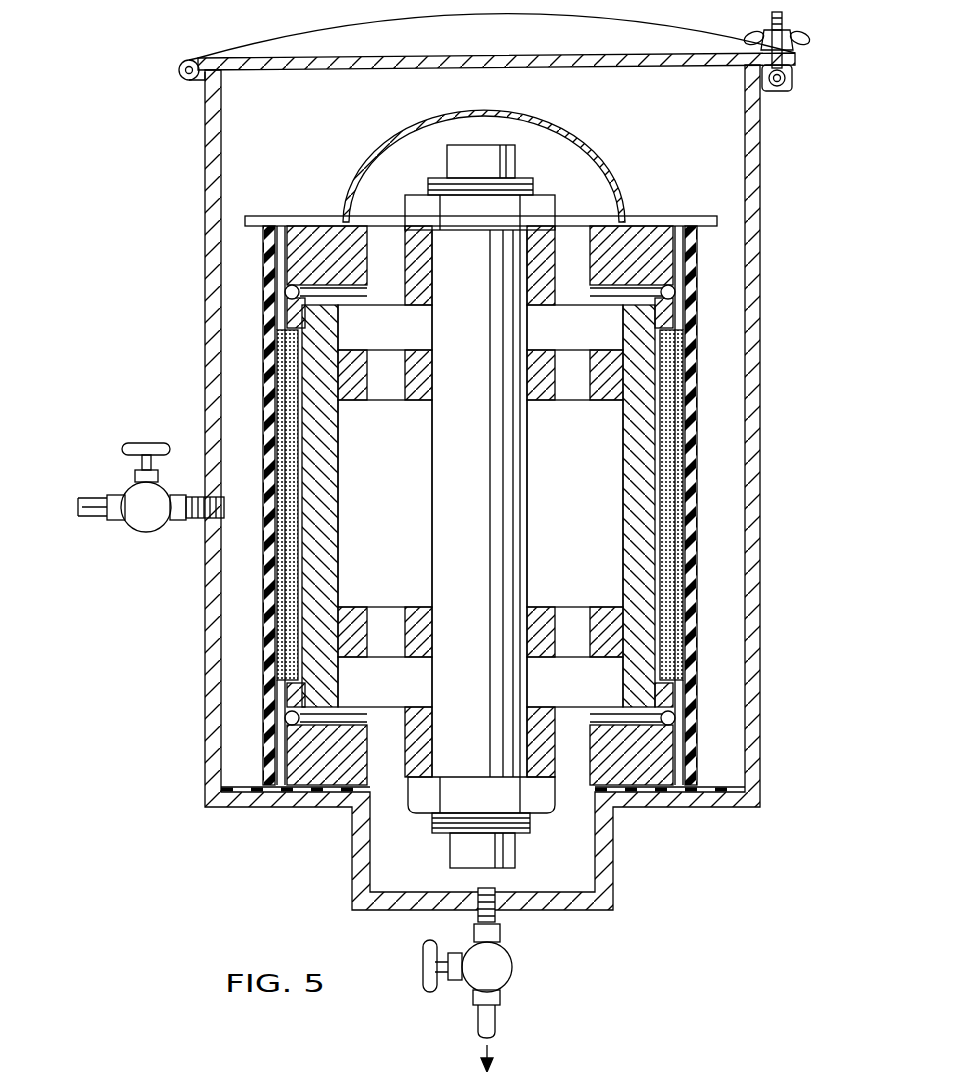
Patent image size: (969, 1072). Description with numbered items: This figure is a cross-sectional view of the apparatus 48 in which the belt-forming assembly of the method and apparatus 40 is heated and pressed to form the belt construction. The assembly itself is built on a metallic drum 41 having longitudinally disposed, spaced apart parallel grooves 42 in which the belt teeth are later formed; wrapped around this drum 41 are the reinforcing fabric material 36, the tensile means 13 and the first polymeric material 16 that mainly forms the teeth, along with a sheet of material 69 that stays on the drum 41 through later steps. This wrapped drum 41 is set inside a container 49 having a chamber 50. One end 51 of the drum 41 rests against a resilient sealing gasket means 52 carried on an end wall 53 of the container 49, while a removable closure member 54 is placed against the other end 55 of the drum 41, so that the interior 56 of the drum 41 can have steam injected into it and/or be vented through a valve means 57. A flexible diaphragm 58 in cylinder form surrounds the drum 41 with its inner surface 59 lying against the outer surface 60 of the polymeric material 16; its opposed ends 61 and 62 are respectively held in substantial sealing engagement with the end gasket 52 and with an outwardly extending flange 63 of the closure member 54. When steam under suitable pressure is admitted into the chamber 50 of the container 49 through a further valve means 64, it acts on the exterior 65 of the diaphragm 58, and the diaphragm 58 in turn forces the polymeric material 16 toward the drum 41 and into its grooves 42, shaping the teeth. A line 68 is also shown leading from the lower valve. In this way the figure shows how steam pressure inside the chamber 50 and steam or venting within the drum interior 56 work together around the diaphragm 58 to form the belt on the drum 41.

The tensile means 13 is at (678, 650).
The first polymeric material 16 is at (682, 392).
The reinforcing fabric material 36 is at (657, 537).
The method and apparatus for making the belt construction 40 is at (825, 1061).
The metallic drum 41 is at (662, 363).
The grooves 42 is at (300, 375).
The apparatus 48 is at (778, 431).
The container 49 is at (763, 493).
The chamber 50 is at (722, 609).
The one end of the drum 51 is at (648, 762).
The resilient sealing gasket means 52 is at (723, 785).
The end wall 53 is at (730, 803).
The removable closure member 54 is at (592, 157).
The other end of the drum 55 is at (628, 232).
The interior of the drum 56 is at (603, 487).
The valve means 57 is at (502, 965).
The flexible diaphragm 58 is at (700, 555).
The inner surface of the diaphragm 59 is at (678, 287).
The outer surface of the polymeric material 60 is at (683, 523).
The end of the diaphragm 61 is at (698, 772).
The end of the diaphragm 62 is at (695, 236).
The outwardly extending flange 63 is at (710, 210).
The valve means 64 is at (143, 517).
The exterior of the diaphragm 65 is at (263, 563).
The outlet line 68 is at (660, 1061).
The sheet of material 69 is at (270, 617).